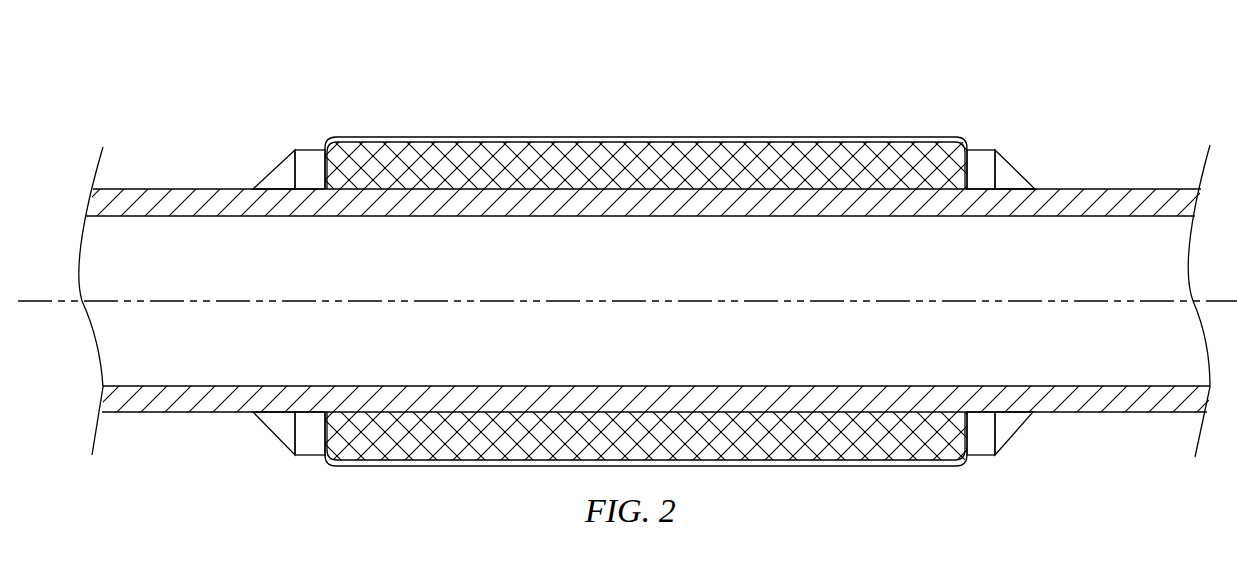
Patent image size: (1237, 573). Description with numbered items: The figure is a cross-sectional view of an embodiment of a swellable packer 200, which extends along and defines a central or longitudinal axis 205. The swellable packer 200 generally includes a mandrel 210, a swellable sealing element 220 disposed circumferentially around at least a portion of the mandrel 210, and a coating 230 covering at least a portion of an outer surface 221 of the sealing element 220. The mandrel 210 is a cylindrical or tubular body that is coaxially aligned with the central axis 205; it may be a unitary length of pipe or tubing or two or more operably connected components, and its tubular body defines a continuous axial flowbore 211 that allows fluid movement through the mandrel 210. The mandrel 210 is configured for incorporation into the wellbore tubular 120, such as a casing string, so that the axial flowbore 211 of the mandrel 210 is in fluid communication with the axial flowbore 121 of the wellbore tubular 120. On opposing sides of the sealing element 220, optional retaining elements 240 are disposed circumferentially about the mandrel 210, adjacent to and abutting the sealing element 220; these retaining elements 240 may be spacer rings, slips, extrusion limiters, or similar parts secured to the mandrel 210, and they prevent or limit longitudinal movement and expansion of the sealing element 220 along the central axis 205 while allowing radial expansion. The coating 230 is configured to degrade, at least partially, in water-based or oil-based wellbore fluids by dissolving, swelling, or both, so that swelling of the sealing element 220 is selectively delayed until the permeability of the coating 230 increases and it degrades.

The swellable packer 200 is at (318, 46).
The wellbore tubular 120 is at (185, 189).
The axial flowbore of the wellbore tubular 121 is at (207, 358).
The central axis 205 is at (1068, 301).
The mandrel 210 is at (254, 188).
The axial flowbore 211 is at (710, 260).
The swellable sealing element 220 is at (420, 150).
The outer surface of the sealing element 221 is at (592, 160).
The coating 230 is at (938, 140).
The retaining element 240 is at (296, 150).